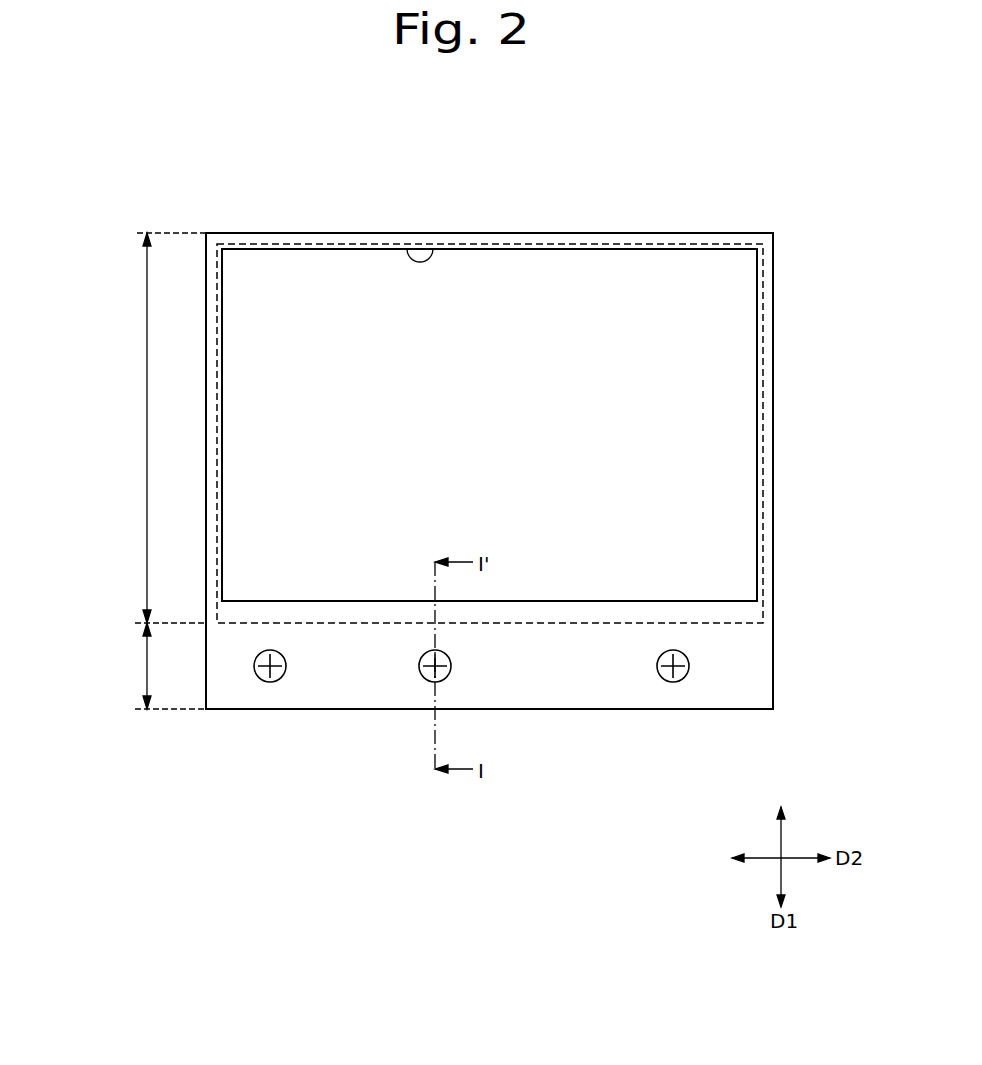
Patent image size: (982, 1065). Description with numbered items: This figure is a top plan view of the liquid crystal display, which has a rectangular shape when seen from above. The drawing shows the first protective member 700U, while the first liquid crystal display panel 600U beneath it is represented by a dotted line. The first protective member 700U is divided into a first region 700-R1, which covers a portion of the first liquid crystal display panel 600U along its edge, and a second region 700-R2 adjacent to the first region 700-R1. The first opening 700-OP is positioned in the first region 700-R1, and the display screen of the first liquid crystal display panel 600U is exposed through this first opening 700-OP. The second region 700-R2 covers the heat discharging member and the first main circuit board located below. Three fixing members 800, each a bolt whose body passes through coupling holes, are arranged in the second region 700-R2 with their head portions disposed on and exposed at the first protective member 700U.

The first protective member 700U is at (758, 704).
The first liquid crystal display panel 600U is at (632, 244).
The first opening 700-OP is at (433, 249).
The fixing member 800 is at (270, 682).
The first region 700-R1 is at (134, 428).
The second region 700-R2 is at (133, 666).